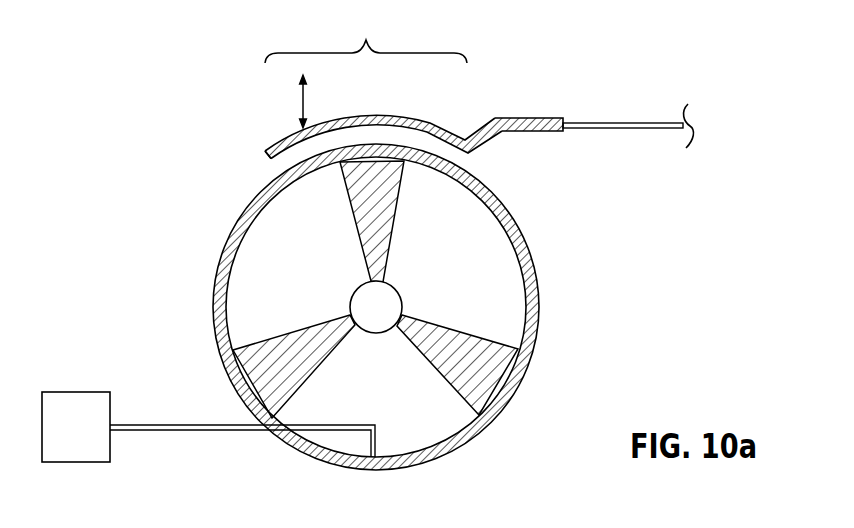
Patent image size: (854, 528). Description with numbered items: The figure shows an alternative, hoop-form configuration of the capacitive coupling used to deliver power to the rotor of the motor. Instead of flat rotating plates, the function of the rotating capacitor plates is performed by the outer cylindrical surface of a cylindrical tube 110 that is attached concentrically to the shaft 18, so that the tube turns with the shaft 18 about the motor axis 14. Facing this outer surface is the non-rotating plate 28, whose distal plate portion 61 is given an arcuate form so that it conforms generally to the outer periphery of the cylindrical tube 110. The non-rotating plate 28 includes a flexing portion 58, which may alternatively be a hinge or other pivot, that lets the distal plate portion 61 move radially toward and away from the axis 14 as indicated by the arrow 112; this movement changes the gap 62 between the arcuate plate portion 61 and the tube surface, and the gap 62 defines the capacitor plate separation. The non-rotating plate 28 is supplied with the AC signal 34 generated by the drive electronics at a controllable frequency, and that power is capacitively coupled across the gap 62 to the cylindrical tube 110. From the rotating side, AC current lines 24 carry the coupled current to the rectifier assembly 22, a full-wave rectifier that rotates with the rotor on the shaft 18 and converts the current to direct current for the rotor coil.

The axis 14 is at (397, 287).
The shaft 18 is at (378, 306).
The rectifier assembly 22 is at (65, 404).
The AC current lines 24 is at (182, 431).
The non-rotating plate 28 is at (418, 117).
The AC signal 34 is at (622, 124).
The flexing portion 58 is at (478, 125).
The distal plate portion 61 is at (368, 40).
The gap 62 is at (283, 163).
The cylindrical tube 110 is at (212, 315).
The arrow 112 is at (300, 98).